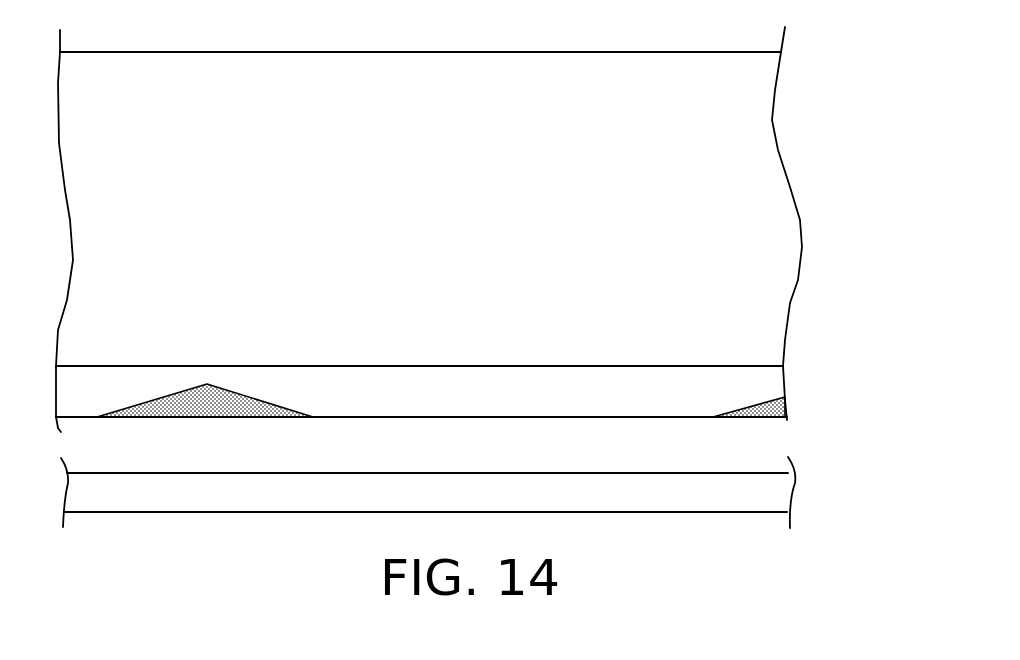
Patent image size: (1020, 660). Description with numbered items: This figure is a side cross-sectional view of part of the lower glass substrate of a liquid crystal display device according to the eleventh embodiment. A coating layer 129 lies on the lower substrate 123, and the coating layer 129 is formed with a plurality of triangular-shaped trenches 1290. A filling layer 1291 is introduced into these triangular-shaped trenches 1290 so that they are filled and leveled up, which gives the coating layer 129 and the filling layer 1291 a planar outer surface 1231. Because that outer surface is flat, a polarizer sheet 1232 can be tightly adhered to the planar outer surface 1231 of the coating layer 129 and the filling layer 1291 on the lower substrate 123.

The lower substrate 123 is at (758, 88).
The planar outer surface 1231 is at (639, 367).
The polarizer sheet 1232 is at (770, 490).
The coating layer 129 is at (518, 390).
The triangular-shaped trenches 1290 is at (300, 412).
The filling layer 1291 is at (203, 400).